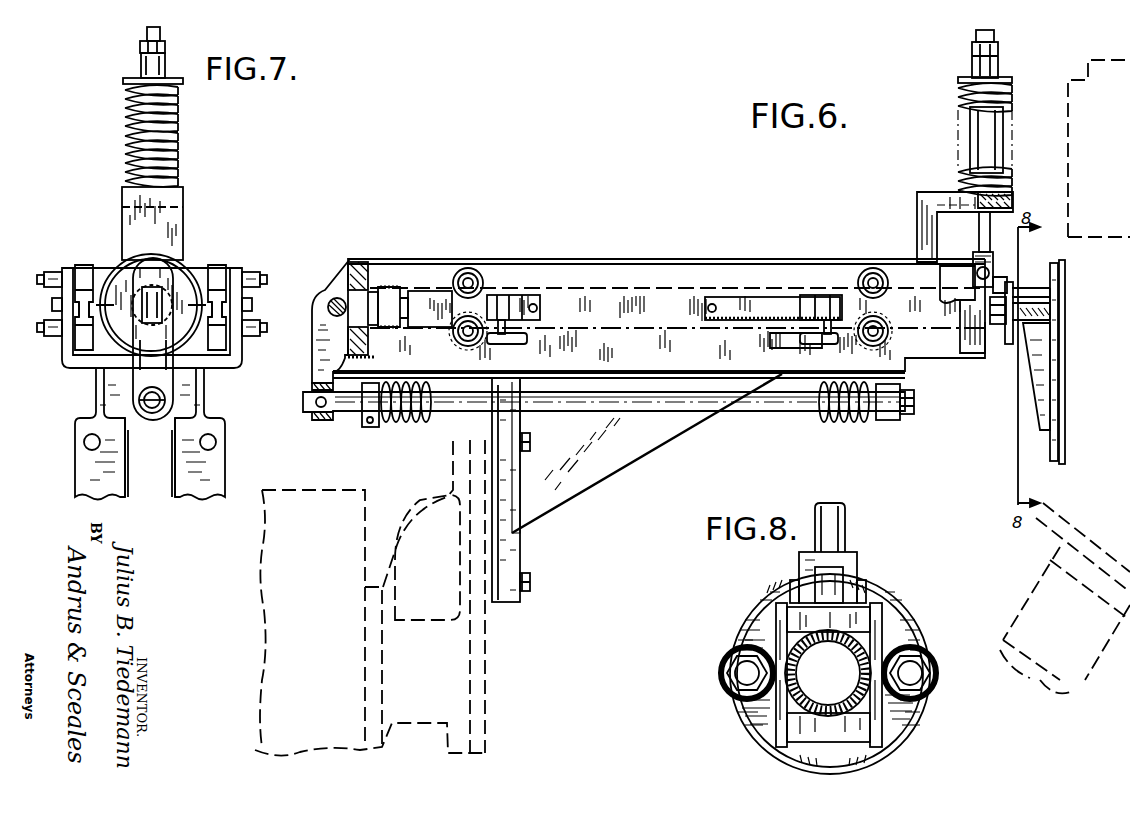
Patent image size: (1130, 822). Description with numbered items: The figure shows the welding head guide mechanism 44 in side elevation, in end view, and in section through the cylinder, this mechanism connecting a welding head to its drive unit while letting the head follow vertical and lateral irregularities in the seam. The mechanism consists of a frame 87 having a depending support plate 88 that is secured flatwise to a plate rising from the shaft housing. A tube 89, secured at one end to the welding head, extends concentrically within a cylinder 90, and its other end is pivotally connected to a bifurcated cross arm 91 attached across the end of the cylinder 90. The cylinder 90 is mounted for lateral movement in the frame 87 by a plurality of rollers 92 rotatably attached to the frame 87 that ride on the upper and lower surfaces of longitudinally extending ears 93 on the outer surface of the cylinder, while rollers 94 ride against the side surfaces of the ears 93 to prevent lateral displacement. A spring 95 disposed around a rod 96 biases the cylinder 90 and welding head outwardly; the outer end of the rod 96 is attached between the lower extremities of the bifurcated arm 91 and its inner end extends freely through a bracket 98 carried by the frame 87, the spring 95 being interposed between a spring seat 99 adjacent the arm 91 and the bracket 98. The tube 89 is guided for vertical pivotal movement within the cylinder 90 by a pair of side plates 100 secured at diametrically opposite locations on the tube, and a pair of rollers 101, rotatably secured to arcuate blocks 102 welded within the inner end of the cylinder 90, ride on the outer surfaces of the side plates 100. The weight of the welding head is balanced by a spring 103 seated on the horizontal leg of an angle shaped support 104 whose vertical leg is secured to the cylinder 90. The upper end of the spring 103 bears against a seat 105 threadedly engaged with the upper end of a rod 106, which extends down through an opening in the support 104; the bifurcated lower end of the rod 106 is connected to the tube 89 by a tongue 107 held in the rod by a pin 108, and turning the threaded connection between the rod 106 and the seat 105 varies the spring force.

In FIG. 7, the welding head guide mechanism 44 is at (192, 264).
In FIG. 6, the welding head guide mechanism 44 is at (641, 259).
In FIG. 7, the frame 87 is at (242, 366).
In FIG. 7, the support plate 88 is at (225, 445).
In FIG. 6, the support plate 88 is at (520, 553).
In FIG. 6, the tube 89 is at (388, 290).
In FIG. 8, the tube 89 is at (792, 690).
In FIG. 7, the cylinder 90 is at (120, 265).
In FIG. 8, the cylinder 90 is at (733, 630).
In FIG. 7, the bifurcated cross arm 91 is at (135, 346).
In FIG. 6, the bifurcated cross arm 91 is at (318, 337).
In FIG. 7, the rollers 92 is at (83, 265).
In FIG. 6, the rollers 92 is at (475, 270).
In FIG. 7, the ears 93 is at (132, 294).
In FIG. 6, the ears 93 is at (426, 300).
In FIG. 7, the rollers 94 is at (58, 310).
In FIG. 6, the rollers 94 is at (522, 300).
In FIG. 6, the spring 95 is at (410, 422).
In FIG. 6, the rod 96 is at (345, 412).
In FIG. 6, the bracket 98 is at (890, 421).
In FIG. 6, the spring seat 99 is at (371, 427).
In FIG. 6, the side plates 100 is at (1004, 340).
In FIG. 8, the side plates 100 is at (780, 620).
In FIG. 6, the rollers 101 is at (990, 320).
In FIG. 8, the rollers 101 is at (720, 668).
In FIG. 6, the arcuate blocks 102 is at (958, 305).
In FIG. 8, the arcuate blocks 102 is at (745, 708).
In FIG. 7, the spring 103 is at (127, 138).
In FIG. 6, the spring 103 is at (958, 172).
In FIG. 7, the angle shaped support 104 is at (122, 192).
In FIG. 6, the angle shaped support 104 is at (917, 193).
In FIG. 7, the seat 105 is at (128, 78).
In FIG. 6, the seat 105 is at (960, 78).
In FIG. 7, the rod 106 is at (147, 33).
In FIG. 6, the rod 106 is at (979, 232).
In FIG. 8, the rod 106 is at (846, 516).
In FIG. 6, the tongue 107 is at (996, 282).
In FIG. 8, the tongue 107 is at (846, 583).
In FIG. 6, the pin 108 is at (990, 265).
In FIG. 8, the pin 108 is at (866, 591).